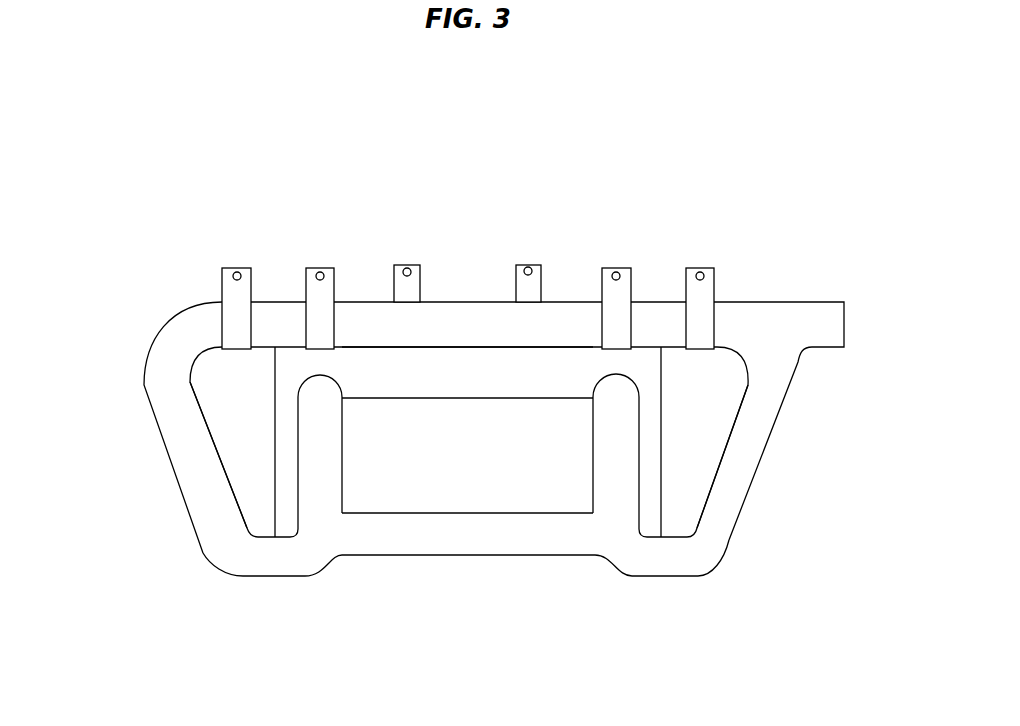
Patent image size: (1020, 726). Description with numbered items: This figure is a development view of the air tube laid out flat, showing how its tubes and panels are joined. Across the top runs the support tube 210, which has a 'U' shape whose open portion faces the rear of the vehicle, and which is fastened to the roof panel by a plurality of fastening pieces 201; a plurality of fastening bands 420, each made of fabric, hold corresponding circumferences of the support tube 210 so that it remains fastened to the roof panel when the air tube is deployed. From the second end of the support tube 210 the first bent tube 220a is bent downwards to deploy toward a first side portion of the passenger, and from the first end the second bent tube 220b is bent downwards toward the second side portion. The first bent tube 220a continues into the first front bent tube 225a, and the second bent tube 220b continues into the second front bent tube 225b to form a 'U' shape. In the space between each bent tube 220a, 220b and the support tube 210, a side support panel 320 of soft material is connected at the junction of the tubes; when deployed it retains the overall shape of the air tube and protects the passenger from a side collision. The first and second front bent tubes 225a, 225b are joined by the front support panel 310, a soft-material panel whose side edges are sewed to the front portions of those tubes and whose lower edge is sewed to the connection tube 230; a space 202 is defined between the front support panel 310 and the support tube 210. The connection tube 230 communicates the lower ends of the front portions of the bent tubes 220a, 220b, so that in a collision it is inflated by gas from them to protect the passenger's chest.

The fastening piece 201 is at (528, 271).
The space 202 is at (449, 373).
The support tube 210 is at (778, 322).
The first bent tube 220a is at (223, 512).
The second bent tube 220b is at (723, 524).
The first front bent tube 225a is at (325, 472).
The second front bent tube 225b is at (617, 477).
The connection tube 230 is at (398, 537).
The front support panel 310 is at (517, 488).
The side support panel 320 is at (238, 424).
The fastening band 420 is at (320, 275).